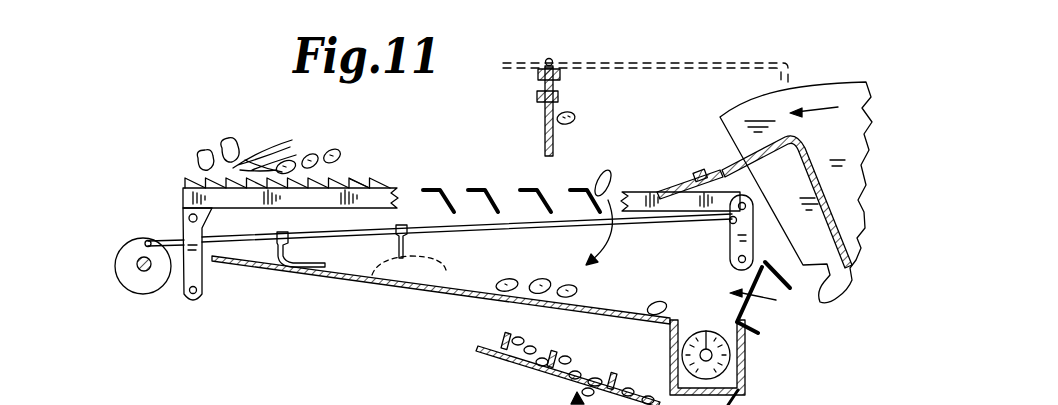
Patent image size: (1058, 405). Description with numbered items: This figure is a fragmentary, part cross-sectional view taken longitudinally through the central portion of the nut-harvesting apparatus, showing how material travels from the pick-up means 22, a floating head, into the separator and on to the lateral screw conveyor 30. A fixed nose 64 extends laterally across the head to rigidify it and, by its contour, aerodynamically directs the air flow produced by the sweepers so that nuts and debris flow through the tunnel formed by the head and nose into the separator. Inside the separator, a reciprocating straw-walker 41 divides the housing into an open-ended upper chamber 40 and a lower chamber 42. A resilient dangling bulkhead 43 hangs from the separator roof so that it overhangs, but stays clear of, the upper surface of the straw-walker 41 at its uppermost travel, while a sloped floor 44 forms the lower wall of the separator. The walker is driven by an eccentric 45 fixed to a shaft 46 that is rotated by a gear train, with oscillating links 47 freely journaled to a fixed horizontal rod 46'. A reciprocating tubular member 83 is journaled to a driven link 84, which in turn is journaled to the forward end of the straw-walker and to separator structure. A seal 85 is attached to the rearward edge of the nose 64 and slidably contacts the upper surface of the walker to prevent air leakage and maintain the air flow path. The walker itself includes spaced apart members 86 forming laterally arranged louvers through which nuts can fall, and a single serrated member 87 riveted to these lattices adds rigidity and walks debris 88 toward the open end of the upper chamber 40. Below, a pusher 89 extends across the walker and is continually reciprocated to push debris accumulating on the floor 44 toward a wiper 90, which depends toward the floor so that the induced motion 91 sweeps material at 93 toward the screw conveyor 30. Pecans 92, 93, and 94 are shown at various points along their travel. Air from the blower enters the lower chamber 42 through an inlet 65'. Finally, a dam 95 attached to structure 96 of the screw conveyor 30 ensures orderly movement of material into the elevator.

The pick-up means 22 is at (811, 77).
The lateral screw conveyor 30 is at (748, 349).
The upper chamber 40 is at (617, 100).
The straw-walker 41 is at (380, 182).
The lower chamber 42 is at (564, 216).
The resilient dangling bulkhead 43 is at (545, 143).
The sloped floor 44 is at (255, 262).
The eccentric 45 is at (120, 268).
The shaft 46 is at (129, 284).
The fixed horizontal rod 46' is at (159, 323).
The oscillating link 47 is at (204, 285).
The fixed nose 64 is at (808, 136).
The inlet 65' is at (773, 301).
The reciprocating tubular member 83 is at (632, 226).
The driven link 84 is at (728, 266).
The seal 85 is at (662, 190).
The spaced apart members 86 is at (434, 190).
The serrated member 87 is at (357, 176).
The debris 88 is at (266, 148).
The pusher 89 is at (326, 261).
The wiper 90 is at (408, 250).
The induced motion 91 is at (423, 268).
The pecan 92 is at (575, 115).
The pecan 93 is at (578, 290).
The pecan 94 is at (600, 362).
The dam 95 is at (740, 400).
The structure 96 is at (746, 362).